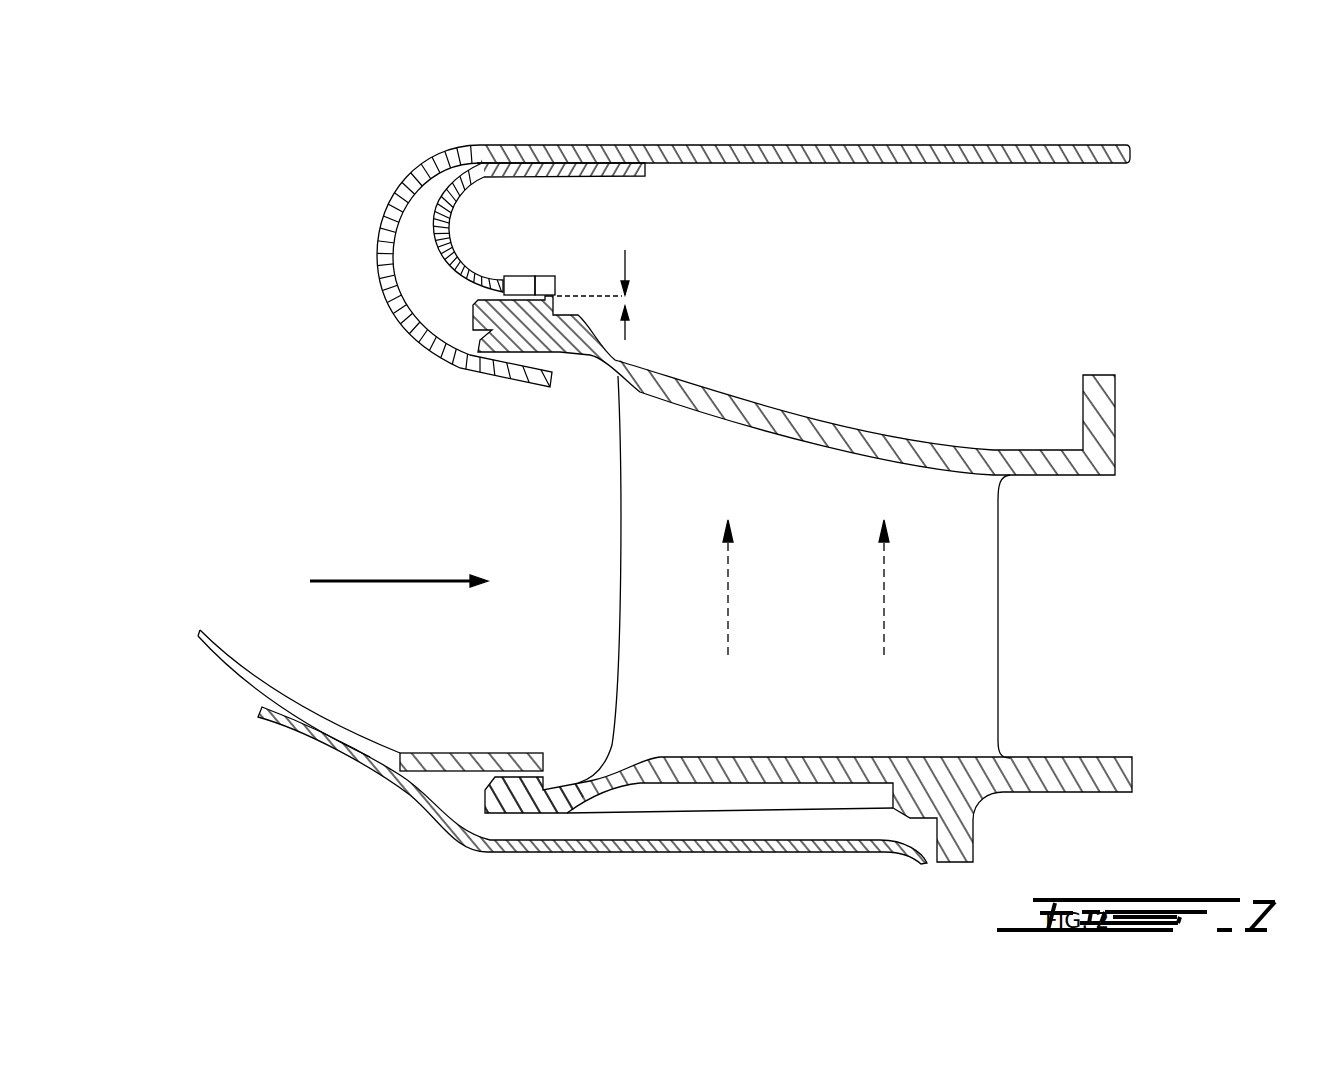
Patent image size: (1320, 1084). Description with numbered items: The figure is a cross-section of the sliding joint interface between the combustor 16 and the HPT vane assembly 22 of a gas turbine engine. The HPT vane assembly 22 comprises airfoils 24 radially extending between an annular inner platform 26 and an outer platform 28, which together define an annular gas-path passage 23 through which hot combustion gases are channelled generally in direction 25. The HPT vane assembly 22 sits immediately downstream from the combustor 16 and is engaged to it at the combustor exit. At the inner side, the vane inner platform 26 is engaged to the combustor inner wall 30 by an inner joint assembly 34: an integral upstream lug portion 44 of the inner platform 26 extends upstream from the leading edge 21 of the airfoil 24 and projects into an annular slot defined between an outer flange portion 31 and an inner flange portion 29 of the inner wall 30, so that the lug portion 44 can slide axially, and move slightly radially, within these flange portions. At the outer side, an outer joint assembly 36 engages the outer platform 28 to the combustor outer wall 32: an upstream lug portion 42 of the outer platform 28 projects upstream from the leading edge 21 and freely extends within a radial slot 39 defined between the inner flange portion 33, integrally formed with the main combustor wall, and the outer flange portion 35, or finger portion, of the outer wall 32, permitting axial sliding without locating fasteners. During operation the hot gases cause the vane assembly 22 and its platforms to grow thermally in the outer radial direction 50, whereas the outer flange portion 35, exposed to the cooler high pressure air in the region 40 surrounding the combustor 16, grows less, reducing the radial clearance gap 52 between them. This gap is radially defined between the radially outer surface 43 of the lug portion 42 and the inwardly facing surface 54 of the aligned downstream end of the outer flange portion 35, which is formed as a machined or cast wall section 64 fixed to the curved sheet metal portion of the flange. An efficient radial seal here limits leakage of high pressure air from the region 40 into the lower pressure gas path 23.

The combustor 16 is at (715, 77).
The leading edge 21 is at (618, 597).
The HPT vane assembly 22 is at (1048, 546).
The annular gas-path passage 23 is at (559, 521).
The airfoil 24 is at (930, 655).
The direction of hot gas flow 25 is at (377, 580).
The inner platform 26 is at (777, 758).
The outer platform 28 is at (731, 397).
The inner flange portion 29 is at (491, 842).
The combustor inner wall 30 is at (258, 740).
The outer flange portion 31 is at (458, 753).
The combustor outer wall 32 is at (375, 210).
The inner flange portion 33 is at (475, 365).
The inner joint assembly 34 is at (455, 802).
The outer flange portion 35 is at (438, 258).
The outer joint assembly 36 is at (455, 327).
The radial slot 39 is at (447, 312).
The region surrounding the combustor 40 is at (733, 261).
The upstream lug portion 42 is at (512, 320).
The radially outer surface 43 is at (541, 276).
The upstream lug portion 44 is at (512, 800).
The outer radial direction 50 is at (884, 587).
The radial clearance gap 52 is at (627, 298).
The inwardly facing surface 54 is at (525, 276).
The wall section 64 is at (541, 262).